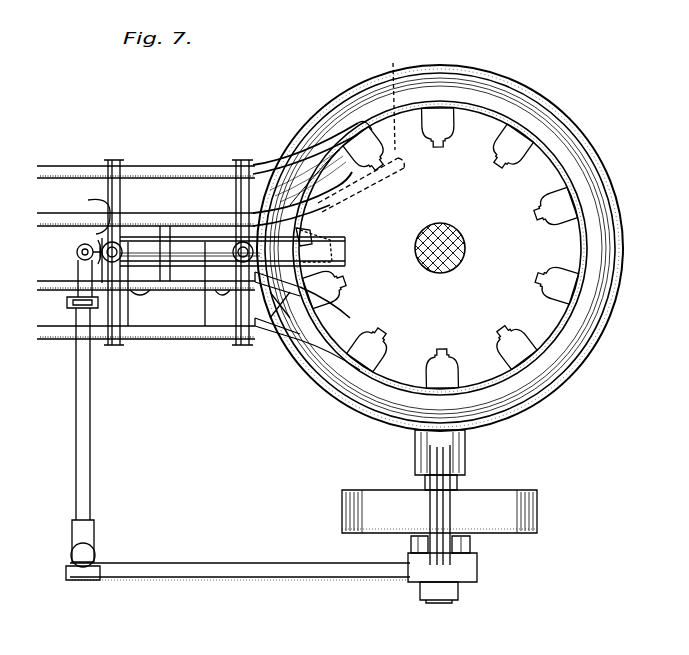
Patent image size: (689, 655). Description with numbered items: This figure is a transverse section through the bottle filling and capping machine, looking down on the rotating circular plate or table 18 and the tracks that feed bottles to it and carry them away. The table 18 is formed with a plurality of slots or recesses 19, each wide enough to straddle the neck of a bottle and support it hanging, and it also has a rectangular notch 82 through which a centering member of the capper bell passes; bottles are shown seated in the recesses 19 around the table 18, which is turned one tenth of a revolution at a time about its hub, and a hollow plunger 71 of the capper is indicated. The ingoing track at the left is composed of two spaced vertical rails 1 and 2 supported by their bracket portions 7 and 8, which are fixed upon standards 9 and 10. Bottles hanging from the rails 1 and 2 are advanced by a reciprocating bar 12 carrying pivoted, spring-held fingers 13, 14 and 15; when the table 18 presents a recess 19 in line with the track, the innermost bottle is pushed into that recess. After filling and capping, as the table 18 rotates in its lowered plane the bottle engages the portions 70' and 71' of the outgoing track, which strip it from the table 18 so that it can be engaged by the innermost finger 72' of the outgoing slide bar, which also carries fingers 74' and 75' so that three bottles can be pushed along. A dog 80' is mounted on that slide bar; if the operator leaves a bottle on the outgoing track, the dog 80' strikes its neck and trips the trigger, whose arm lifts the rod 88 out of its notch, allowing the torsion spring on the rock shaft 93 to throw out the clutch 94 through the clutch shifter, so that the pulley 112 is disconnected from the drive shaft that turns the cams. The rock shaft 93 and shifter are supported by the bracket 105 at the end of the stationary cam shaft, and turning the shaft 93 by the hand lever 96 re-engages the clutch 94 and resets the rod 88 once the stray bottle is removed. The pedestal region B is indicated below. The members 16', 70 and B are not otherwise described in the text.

The vertical rail 1 is at (67, 297).
The vertical rail 2 is at (52, 339).
The bracket portion 7 is at (108, 340).
The bracket portion 8 is at (258, 170).
The standard 9 is at (118, 248).
The standard 10 is at (205, 236).
The bar 12 is at (166, 340).
The finger 13 is at (170, 308).
The finger 14 is at (208, 306).
The finger 15 is at (284, 330).
The drum rim 16' is at (443, 248).
The circular plate or table 18 is at (312, 350).
The slot or recess 19 is at (546, 230).
The feed chute 70 is at (361, 185).
The outgoing track portion 70' is at (393, 97).
The hollow plunger 71 is at (310, 116).
The outgoing track portion 71' is at (354, 88).
The innermost finger 72' is at (320, 247).
The finger 74' is at (271, 182).
The finger 75' is at (244, 154).
The dog 80' is at (70, 236).
The rectangular notch 82 is at (386, 344).
The rod 88 is at (84, 458).
The shaft 93 is at (216, 564).
The clutch 94 is at (470, 540).
The hand lever 96 is at (96, 554).
The bracket 105 is at (432, 496).
The pulley 112 is at (345, 511).
The bearing B is at (483, 475).